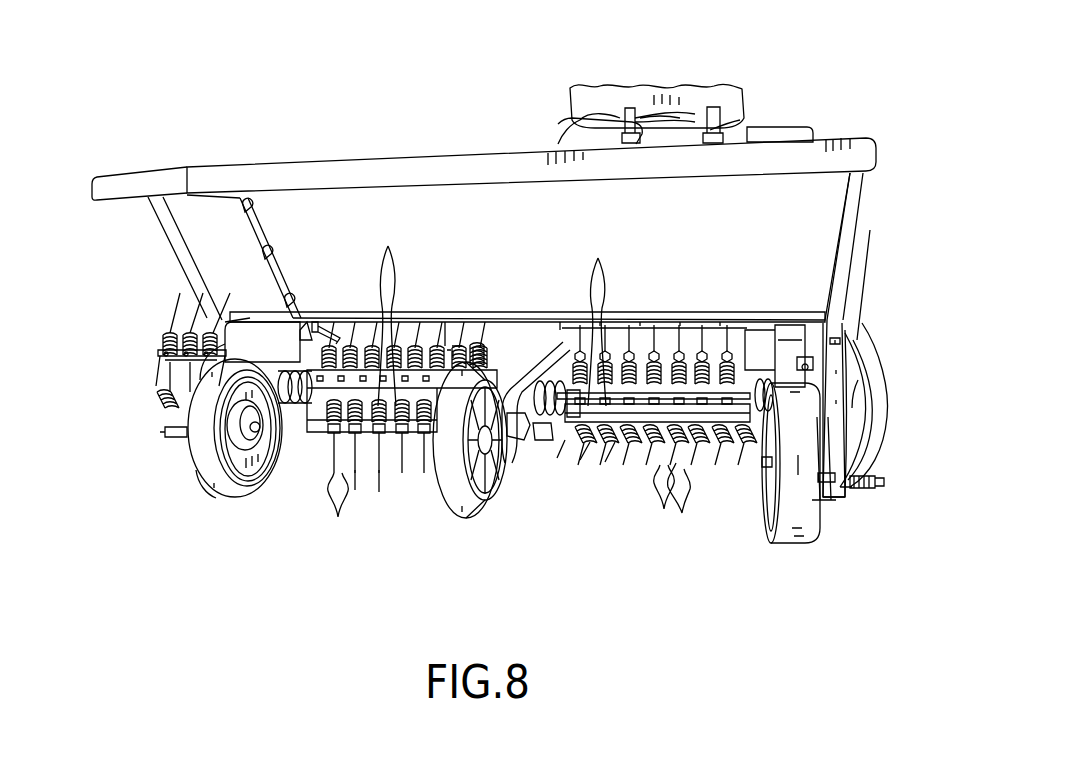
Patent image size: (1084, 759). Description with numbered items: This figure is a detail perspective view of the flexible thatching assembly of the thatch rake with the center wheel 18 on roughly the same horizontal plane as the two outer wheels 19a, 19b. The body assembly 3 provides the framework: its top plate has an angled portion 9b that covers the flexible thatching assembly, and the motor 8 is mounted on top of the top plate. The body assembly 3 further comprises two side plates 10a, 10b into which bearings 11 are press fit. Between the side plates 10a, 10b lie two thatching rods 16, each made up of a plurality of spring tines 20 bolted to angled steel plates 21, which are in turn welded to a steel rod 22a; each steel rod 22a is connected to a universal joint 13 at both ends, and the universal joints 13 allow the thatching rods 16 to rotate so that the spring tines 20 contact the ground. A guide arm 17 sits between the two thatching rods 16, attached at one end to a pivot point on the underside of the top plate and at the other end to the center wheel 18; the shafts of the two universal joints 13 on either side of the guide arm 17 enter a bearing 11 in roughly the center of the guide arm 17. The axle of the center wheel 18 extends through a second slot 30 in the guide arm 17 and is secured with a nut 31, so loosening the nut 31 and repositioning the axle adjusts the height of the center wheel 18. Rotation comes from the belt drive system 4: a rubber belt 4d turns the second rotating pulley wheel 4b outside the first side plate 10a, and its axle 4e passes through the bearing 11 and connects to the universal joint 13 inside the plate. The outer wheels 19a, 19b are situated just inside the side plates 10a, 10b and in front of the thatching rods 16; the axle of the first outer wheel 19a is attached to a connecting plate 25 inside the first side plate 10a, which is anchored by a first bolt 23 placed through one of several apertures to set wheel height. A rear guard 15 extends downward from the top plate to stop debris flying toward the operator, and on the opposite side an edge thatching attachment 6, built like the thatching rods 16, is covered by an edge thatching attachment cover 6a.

The body assembly 3 is at (452, 130).
The belt drive system 4 is at (880, 278).
The second rotating pulley wheel 4b is at (874, 452).
The rubber belt 4d is at (842, 290).
The axle of the second rotating pulley wheel 4e is at (862, 397).
The edge thatching attachment 6 is at (141, 314).
The edge thatching attachment cover 6a is at (130, 176).
The motor 8 is at (715, 100).
The angled portion 9b is at (267, 162).
The first side plate 10a is at (834, 344).
The second side plate 10b is at (228, 343).
The bearing 11 is at (264, 376).
The universal joint 13 is at (293, 405).
The rear guard 15 is at (769, 330).
The thatching rod 16 is at (388, 520).
The guide arm 17 is at (496, 505).
The center wheel 18 is at (458, 330).
The first outer wheel 19a is at (786, 540).
The second outer wheel 19b is at (203, 476).
The spring tine 20 is at (164, 308).
The angled steel plate 21 is at (491, 311).
The steel rod 22a is at (320, 322).
The first bolt 23 is at (861, 488).
The connecting plate 25 is at (828, 516).
The second slot 30 is at (531, 468).
The nut 31 is at (524, 377).